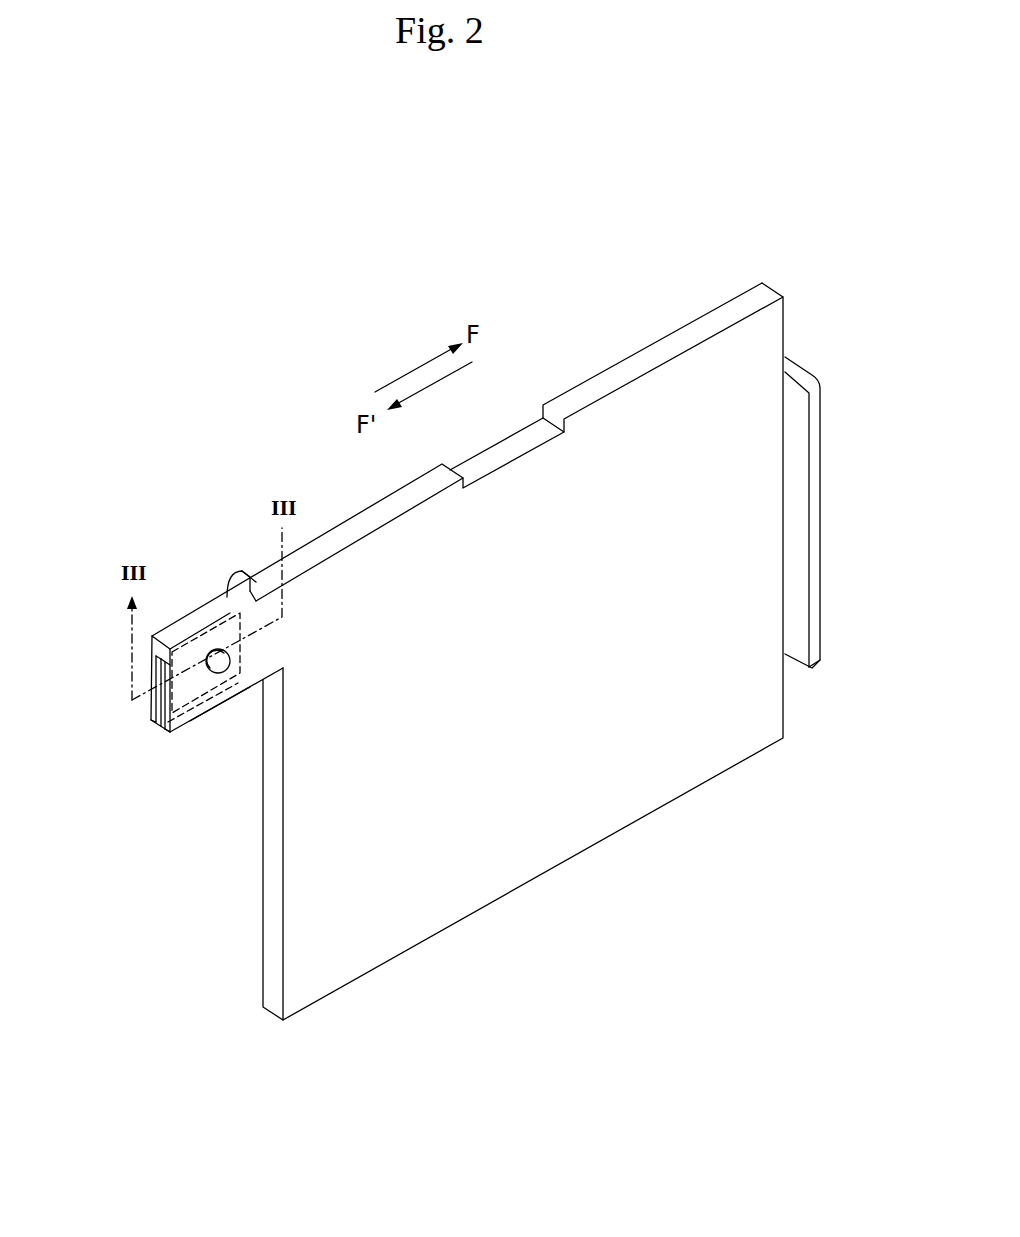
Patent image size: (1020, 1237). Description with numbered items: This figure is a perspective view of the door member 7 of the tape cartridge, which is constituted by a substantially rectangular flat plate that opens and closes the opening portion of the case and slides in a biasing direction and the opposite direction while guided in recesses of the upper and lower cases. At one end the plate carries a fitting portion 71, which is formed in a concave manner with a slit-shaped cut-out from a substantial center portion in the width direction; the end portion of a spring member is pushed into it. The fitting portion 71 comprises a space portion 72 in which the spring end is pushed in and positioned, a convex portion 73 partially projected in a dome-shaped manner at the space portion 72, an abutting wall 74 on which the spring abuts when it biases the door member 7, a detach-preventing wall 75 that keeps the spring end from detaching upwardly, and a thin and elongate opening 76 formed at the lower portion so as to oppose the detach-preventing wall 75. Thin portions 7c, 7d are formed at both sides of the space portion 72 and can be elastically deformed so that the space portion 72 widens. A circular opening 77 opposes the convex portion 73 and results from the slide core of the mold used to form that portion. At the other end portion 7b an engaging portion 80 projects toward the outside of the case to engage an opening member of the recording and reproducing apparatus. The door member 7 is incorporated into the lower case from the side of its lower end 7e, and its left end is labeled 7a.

The door member 7 is at (586, 793).
The left end face of plate 7a is at (270, 948).
The other end portion 7b is at (787, 710).
The thin portion 7c is at (145, 703).
The thin portion 7d is at (162, 735).
The lower end 7e is at (483, 870).
The fitting portion 71 is at (190, 612).
The space portion 72 is at (155, 728).
The convex portion 73 is at (217, 633).
The abutting wall 74 is at (228, 680).
The detach-preventing wall 75 is at (143, 667).
The thin and elongate opening 76 is at (193, 715).
The circular opening 77 is at (212, 710).
The engaging portion 80 is at (802, 422).